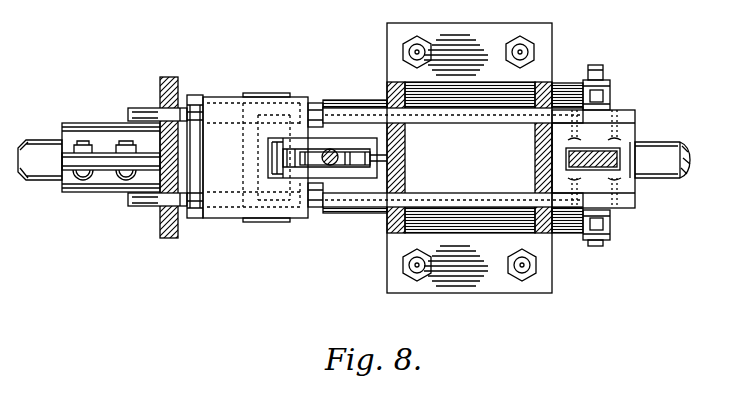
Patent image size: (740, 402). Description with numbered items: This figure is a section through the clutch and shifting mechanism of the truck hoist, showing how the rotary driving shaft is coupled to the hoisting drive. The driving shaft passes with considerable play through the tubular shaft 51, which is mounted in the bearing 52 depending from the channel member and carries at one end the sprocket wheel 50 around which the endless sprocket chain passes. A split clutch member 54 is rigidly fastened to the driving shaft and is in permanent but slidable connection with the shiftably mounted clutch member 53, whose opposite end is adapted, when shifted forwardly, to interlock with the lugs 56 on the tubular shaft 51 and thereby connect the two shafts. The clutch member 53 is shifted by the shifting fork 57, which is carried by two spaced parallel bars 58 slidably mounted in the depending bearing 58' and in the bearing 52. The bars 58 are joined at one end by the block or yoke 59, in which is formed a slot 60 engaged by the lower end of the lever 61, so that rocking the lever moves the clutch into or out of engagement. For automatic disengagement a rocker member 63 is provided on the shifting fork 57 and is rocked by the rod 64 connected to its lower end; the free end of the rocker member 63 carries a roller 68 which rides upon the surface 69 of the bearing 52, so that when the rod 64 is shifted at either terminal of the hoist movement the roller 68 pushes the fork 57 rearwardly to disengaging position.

The sprocket wheel 50 is at (605, 75).
The tubular shaft 51 is at (568, 242).
The bearing 52 is at (533, 289).
The clutch member 53 is at (196, 222).
The split clutch member 54 is at (100, 172).
The lugs 56 is at (316, 222).
The shifting fork 57 is at (255, 157).
The bars 58 is at (453, 157).
The depending bearing 58' is at (157, 172).
The block or yoke 59 is at (628, 136).
The slot 60 is at (620, 166).
The lever 61 is at (633, 178).
The rocker member 63 is at (353, 170).
The rod 64 is at (333, 149).
The roller 68 is at (365, 162).
The surface 69 is at (380, 150).